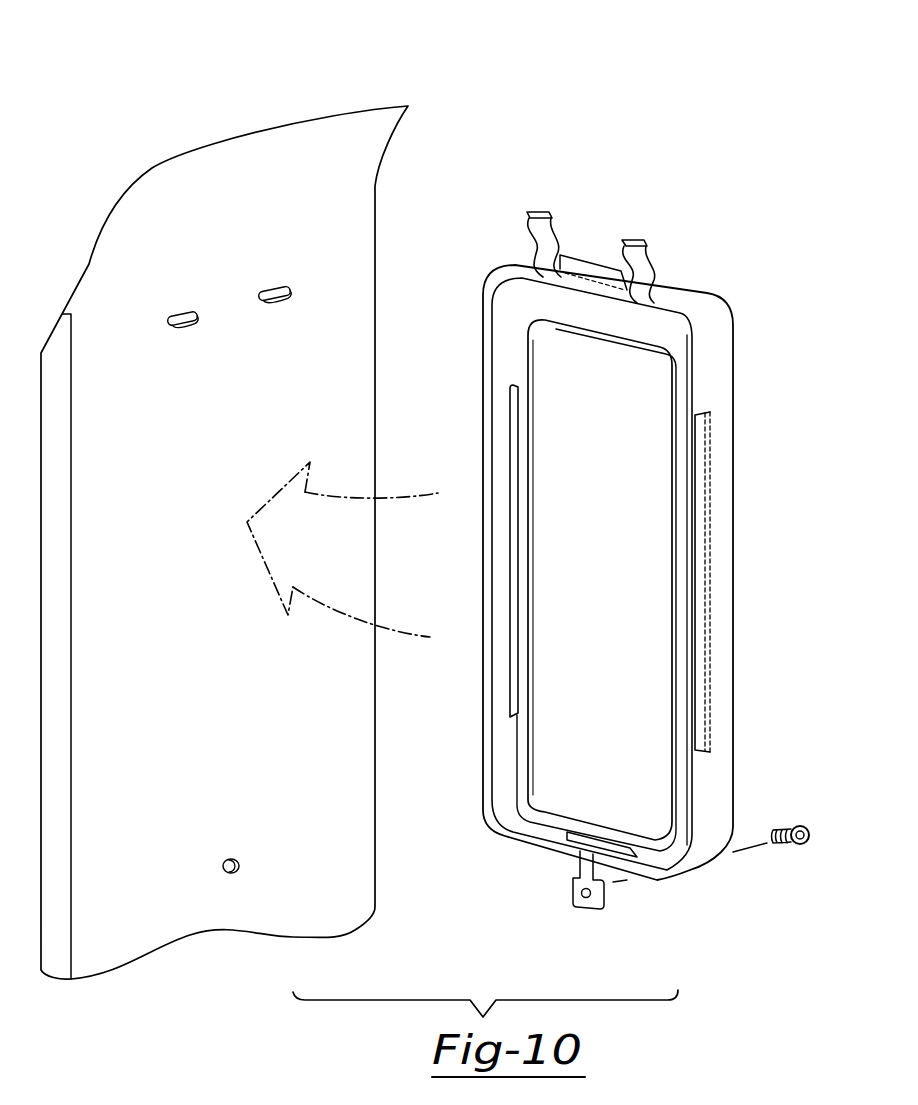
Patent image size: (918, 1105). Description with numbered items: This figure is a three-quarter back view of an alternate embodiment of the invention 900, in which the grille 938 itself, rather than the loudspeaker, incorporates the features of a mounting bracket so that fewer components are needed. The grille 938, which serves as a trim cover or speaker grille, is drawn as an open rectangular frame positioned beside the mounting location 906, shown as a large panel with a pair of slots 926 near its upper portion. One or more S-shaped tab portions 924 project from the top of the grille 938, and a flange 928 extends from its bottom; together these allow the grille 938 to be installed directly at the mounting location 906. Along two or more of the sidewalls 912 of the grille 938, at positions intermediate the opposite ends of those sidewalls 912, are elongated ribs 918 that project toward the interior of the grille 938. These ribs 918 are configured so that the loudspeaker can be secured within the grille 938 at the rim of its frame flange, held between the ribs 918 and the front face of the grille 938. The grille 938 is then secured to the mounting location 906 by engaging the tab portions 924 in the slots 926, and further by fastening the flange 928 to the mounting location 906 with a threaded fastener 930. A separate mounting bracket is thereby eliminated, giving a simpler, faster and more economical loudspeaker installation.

The invention 900 is at (538, 72).
The mounting location 906 is at (204, 150).
The sidewalls 912 is at (722, 513).
The elongated ribs 918 is at (515, 459).
The S-shaped tab portion 924 is at (637, 241).
The slots 926 is at (265, 312).
The flange 928 is at (572, 892).
The threaded fastener 930 is at (790, 826).
The grille 938 is at (730, 299).